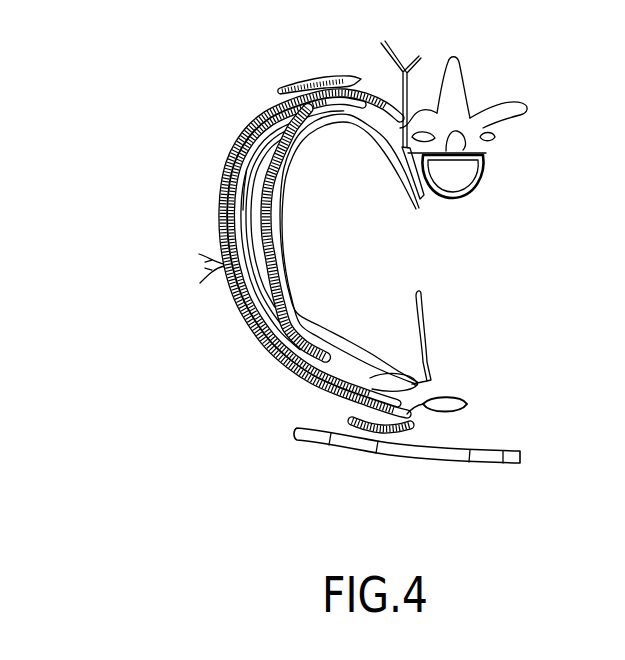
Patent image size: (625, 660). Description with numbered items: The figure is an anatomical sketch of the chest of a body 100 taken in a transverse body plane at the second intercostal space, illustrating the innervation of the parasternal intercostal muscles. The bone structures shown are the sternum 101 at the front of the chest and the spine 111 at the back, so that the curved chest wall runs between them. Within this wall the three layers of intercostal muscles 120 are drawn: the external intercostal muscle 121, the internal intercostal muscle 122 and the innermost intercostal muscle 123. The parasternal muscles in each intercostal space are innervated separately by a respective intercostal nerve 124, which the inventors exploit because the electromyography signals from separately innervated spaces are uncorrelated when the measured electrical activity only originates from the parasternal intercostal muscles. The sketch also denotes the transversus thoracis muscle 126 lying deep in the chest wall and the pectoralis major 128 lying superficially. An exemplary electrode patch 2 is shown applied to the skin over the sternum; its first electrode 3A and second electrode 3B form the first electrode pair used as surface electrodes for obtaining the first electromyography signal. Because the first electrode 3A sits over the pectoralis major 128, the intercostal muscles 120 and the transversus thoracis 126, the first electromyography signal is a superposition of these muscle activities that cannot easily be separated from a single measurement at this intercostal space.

The body 100 is at (168, 152).
The sternum 101 is at (470, 405).
The spine 111 is at (483, 155).
The intercostal muscles 120 is at (280, 219).
The external intercostal muscle 121 is at (277, 95).
The internal intercostal muscle 122 is at (258, 116).
The innermost intercostal muscle 123 is at (268, 255).
The intercostal nerve 124 is at (257, 183).
The transversus thoracis muscle 126 is at (398, 384).
The pectoralis major 128 is at (352, 420).
The electrode patch 2 is at (407, 476).
The first electrode 3A is at (350, 445).
The second electrode 3B is at (488, 463).